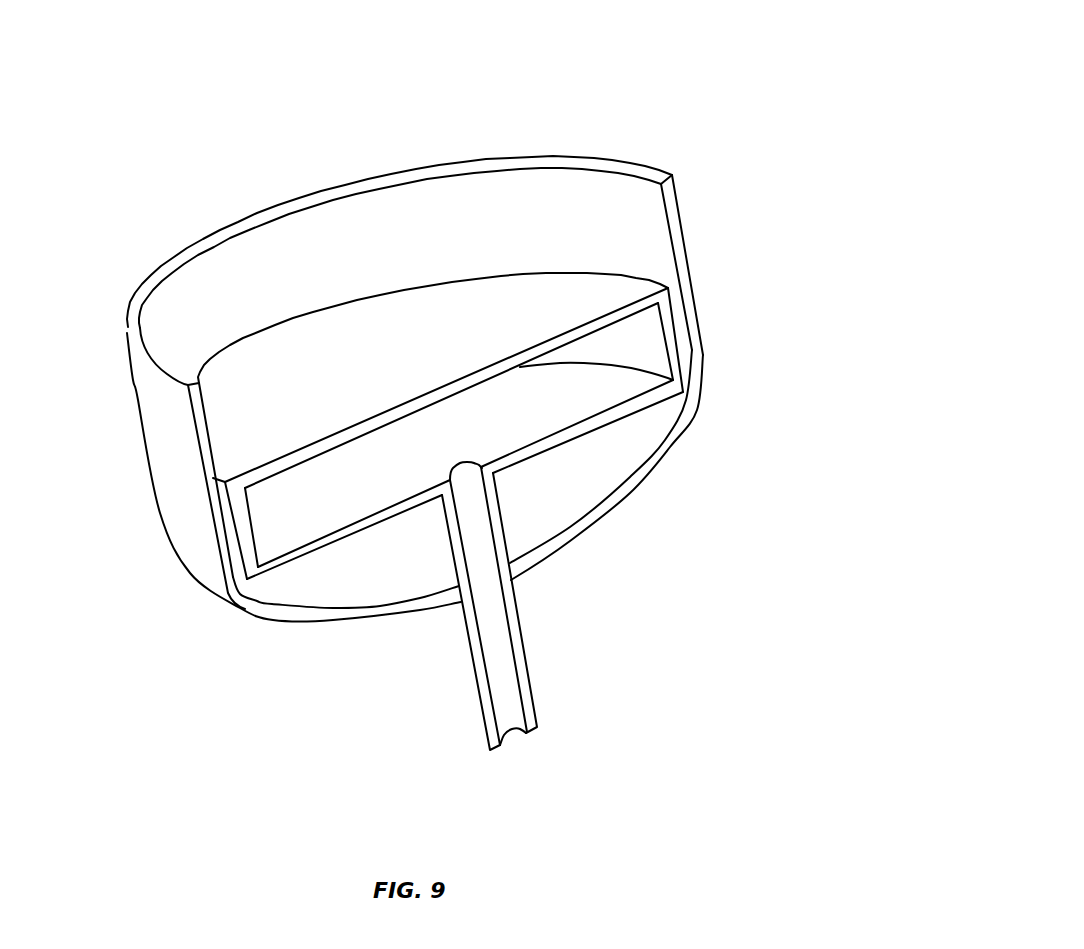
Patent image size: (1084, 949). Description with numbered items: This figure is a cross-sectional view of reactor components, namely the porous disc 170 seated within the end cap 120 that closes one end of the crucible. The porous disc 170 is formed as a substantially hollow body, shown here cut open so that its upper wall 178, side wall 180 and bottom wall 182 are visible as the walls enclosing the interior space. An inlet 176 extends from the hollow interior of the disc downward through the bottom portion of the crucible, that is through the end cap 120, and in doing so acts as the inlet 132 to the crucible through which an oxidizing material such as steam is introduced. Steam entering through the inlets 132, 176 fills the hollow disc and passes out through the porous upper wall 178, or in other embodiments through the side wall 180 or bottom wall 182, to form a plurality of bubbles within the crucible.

The cap 120 is at (488, 158).
The porous disc 170 is at (387, 323).
The upper wall 178 is at (512, 324).
The side wall 180 is at (675, 327).
The bottom wall 182 is at (613, 423).
The inlet 132 is at (595, 606).
The inlet 176 is at (527, 643).